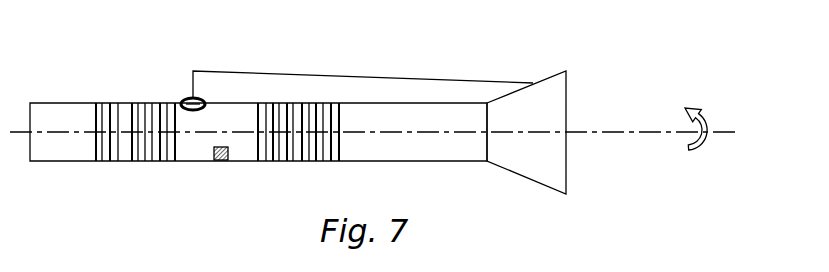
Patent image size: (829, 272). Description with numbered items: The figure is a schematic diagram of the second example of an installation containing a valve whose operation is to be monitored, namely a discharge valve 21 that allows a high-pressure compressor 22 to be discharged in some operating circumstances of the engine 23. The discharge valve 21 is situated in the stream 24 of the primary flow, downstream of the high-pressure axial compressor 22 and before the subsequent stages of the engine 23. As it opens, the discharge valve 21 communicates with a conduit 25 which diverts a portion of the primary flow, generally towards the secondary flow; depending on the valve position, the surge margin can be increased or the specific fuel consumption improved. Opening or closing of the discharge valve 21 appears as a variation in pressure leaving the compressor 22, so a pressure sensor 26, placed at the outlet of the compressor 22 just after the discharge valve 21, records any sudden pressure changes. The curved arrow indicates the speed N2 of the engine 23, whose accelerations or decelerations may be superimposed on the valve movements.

The discharge valve 21 is at (184, 98).
The high-pressure compressor 22 is at (113, 103).
The engine 23 is at (440, 64).
The stream of the primary flow 24 is at (200, 147).
The conduit 25 is at (259, 71).
The pressure sensor 26 is at (222, 161).
The speed of the engine N2 is at (707, 119).